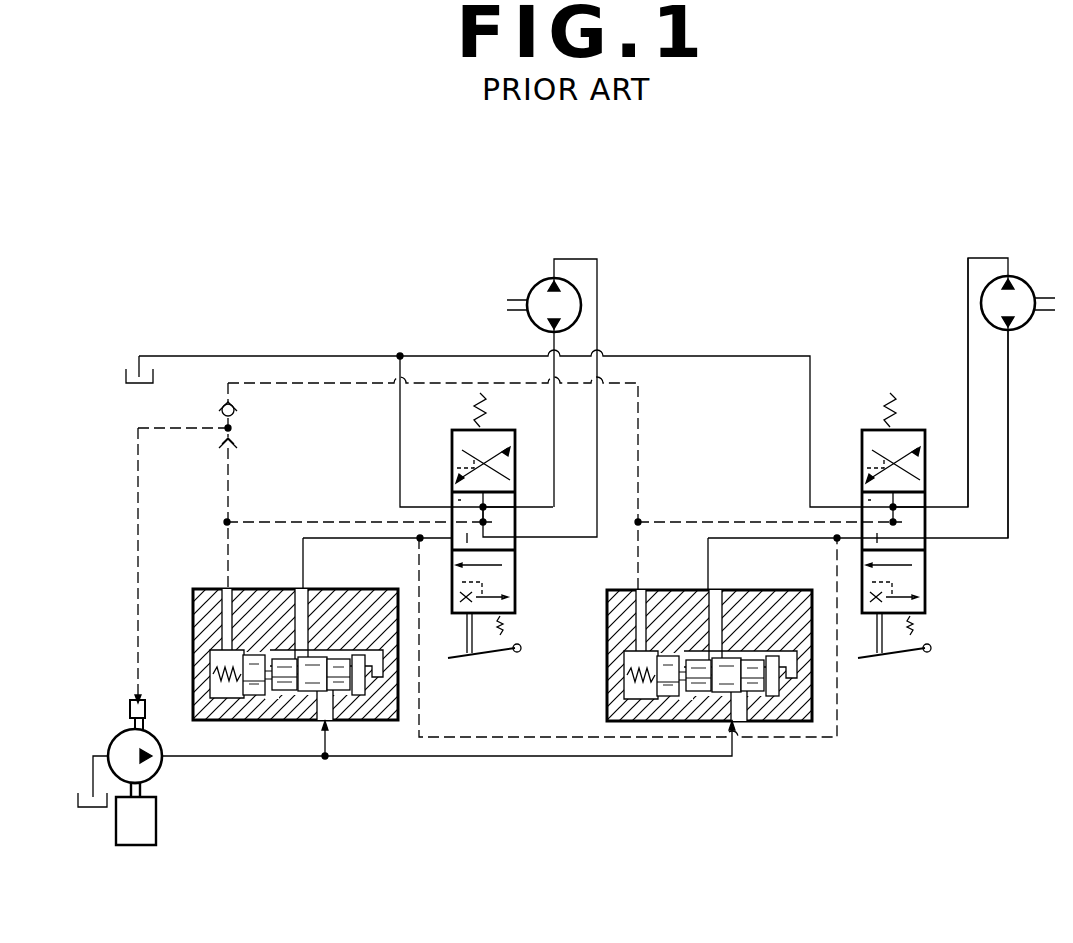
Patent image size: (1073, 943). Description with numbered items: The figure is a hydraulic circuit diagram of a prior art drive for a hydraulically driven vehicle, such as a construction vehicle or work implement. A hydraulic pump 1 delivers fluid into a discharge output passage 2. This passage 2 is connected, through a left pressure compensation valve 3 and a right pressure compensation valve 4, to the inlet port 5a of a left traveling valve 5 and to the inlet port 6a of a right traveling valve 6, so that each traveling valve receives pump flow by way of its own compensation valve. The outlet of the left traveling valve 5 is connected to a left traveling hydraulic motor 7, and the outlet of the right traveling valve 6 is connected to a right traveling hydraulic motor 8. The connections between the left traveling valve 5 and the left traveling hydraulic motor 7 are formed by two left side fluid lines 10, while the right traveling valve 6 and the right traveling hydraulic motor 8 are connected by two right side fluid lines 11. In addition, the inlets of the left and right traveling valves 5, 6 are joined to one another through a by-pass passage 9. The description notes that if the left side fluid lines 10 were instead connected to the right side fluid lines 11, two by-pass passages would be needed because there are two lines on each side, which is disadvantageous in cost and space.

The hydraulic pump 1 is at (130, 713).
The discharge output passage 2 is at (350, 758).
The left pressure compensation valve 3 is at (267, 588).
The right pressure compensation valve 4 is at (728, 556).
The left traveling valve 5 is at (457, 447).
The inlet port of left traveling valve 5a is at (452, 540).
The right traveling valve 6 is at (927, 430).
The inlet port of right traveling valve 6a is at (853, 543).
The left traveling hydraulic motor 7 is at (538, 285).
The right traveling hydraulic motor 8 is at (1028, 282).
The by-pass passage 9 is at (563, 737).
The left side fluid line 10 is at (555, 420).
The right side fluid line 11 is at (967, 343).